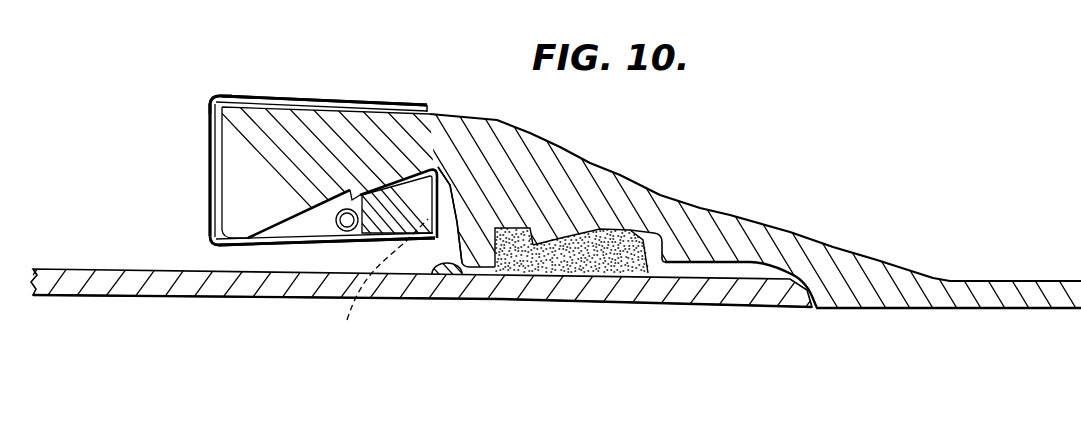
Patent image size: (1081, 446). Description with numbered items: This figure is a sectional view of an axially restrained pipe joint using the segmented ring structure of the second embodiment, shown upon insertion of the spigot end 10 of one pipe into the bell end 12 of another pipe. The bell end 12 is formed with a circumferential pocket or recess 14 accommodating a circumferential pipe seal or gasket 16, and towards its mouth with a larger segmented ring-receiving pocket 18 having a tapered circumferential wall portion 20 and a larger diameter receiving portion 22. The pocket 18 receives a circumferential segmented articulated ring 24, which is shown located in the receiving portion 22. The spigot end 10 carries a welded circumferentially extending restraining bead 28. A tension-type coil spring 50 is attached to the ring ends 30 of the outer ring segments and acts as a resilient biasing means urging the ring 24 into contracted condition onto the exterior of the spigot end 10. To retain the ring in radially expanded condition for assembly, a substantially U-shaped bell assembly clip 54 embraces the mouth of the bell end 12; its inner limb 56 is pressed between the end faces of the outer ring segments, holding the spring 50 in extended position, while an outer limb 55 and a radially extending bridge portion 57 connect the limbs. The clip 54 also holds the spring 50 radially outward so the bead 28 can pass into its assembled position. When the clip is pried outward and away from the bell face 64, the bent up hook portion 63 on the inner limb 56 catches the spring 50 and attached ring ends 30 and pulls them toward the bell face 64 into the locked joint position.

The spigot end 10 is at (188, 300).
The bell end 12 is at (611, 192).
The circumferential pocket or recess 14 is at (650, 240).
The pipe seal or gasket 16 is at (627, 275).
The segmented ring-receiving pocket 18 is at (349, 182).
The tapered circumferential wall portion 20 is at (291, 213).
The receiving portion 22 is at (437, 164).
The segmented ring 24 is at (416, 245).
The restraining bead 28 is at (445, 272).
The ring ends 30 is at (342, 220).
The tension-type coil spring 50 is at (343, 230).
The bell assembly clip 54 is at (195, 151).
The outer limb 55 is at (373, 103).
The inner limb 56 is at (273, 247).
The bridge portion 57 is at (210, 117).
The hook portion 63 is at (370, 278).
The bell face 64 is at (222, 213).